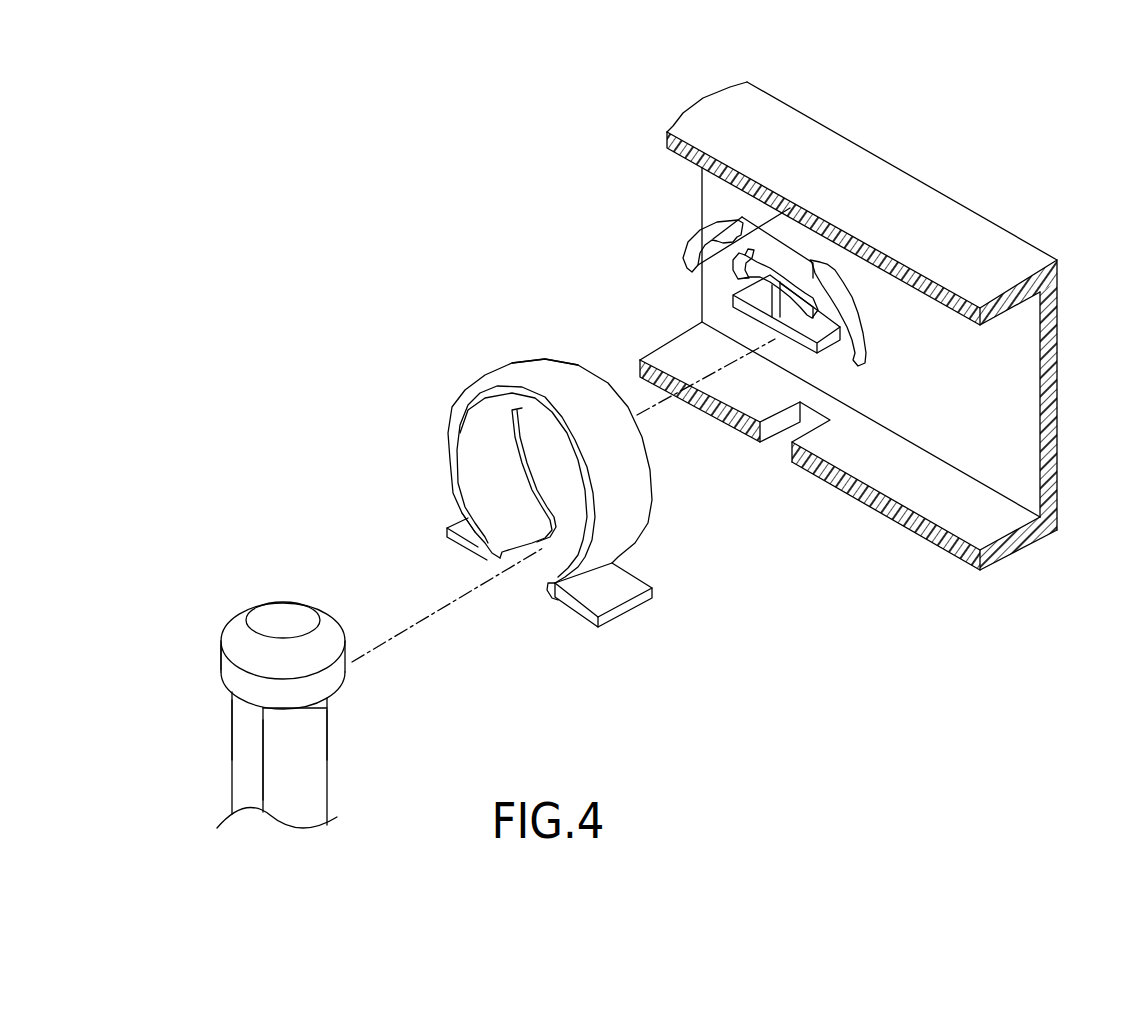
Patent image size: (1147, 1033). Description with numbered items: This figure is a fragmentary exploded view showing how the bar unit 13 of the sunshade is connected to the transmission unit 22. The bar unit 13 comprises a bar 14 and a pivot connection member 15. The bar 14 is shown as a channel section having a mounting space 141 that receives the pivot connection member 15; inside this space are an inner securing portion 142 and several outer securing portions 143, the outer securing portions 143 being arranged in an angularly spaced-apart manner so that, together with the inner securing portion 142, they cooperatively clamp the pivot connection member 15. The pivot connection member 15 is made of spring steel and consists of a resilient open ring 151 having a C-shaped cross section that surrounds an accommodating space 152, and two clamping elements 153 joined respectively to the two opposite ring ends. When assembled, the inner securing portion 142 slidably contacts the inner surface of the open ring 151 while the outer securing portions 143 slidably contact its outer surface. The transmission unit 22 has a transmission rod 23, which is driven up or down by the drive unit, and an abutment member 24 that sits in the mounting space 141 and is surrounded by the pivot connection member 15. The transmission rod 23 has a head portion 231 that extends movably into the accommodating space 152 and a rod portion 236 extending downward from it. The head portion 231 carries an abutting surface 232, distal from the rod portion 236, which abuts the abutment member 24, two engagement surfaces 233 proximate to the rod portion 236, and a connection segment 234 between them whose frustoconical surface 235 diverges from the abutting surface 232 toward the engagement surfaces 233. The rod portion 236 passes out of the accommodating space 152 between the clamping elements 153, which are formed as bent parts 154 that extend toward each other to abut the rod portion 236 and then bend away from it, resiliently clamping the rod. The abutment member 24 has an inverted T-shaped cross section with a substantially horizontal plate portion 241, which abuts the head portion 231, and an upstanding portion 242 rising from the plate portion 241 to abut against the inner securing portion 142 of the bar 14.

The bar unit 13 is at (952, 187).
The bar 14 is at (893, 202).
The mounting space 141 is at (1013, 367).
The inner securing portion 142 is at (778, 243).
The outer securing portion 143 is at (716, 228).
The pivot connection member 15 is at (414, 362).
The resilient open ring 151 is at (538, 382).
The accommodating space 152 is at (563, 468).
The clamping element 153 is at (456, 542).
The bent part 154 is at (548, 517).
The transmission unit 22 is at (185, 617).
The transmission rod 23 is at (215, 770).
The head portion 231 is at (251, 605).
The abutting surface 232 is at (290, 617).
The engagement surface 233 is at (228, 690).
The connection segment 234 is at (223, 655).
The frustoconical surface 235 is at (267, 662).
The rod portion 236 is at (303, 787).
The abutment member 24 is at (828, 360).
The plate portion 241 is at (797, 336).
The upstanding portion 242 is at (777, 292).